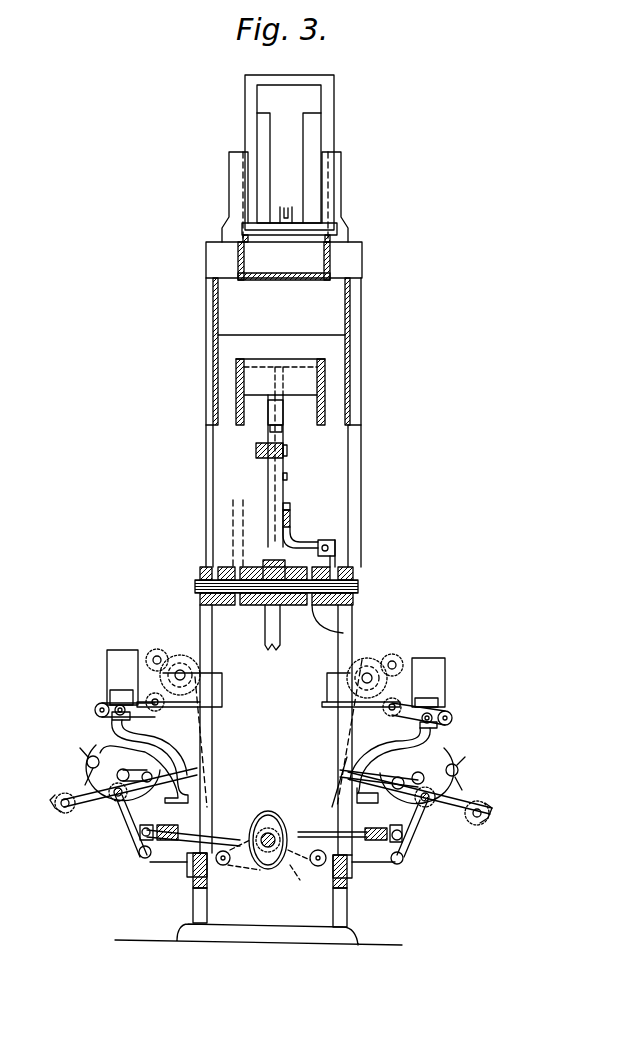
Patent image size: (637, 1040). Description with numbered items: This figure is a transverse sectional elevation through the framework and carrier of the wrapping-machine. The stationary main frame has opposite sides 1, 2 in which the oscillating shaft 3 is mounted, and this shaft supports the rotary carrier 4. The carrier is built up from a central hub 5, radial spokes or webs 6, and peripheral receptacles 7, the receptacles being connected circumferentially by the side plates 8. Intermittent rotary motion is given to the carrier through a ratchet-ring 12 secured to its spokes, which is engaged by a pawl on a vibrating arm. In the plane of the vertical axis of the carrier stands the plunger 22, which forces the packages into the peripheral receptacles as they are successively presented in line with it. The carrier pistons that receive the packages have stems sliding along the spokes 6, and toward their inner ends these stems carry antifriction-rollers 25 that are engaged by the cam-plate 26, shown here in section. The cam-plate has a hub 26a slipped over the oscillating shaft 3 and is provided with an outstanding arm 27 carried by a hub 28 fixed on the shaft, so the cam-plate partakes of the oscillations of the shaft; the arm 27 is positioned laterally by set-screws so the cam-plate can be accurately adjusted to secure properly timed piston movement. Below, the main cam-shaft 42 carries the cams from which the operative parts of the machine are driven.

The plunger 22 is at (317, 231).
The peripheral receptacles 7 is at (248, 380).
The side plates 8 is at (236, 414).
The ratchet-ring 12 is at (256, 452).
The rotary carrier 4 is at (268, 470).
The spokes 6 is at (268, 487).
The antifriction-rollers 25 is at (290, 507).
The cam-plate 26 is at (292, 524).
The outstanding arm 27 is at (315, 543).
The main frame side 1 is at (200, 600).
The central hub 5 is at (250, 605).
The oscillating shaft 3 is at (358, 592).
The main frame side 2 is at (355, 603).
The hub 28 is at (353, 617).
The cam-plate hub 26a is at (343, 633).
The main cam-shaft 42 is at (280, 862).